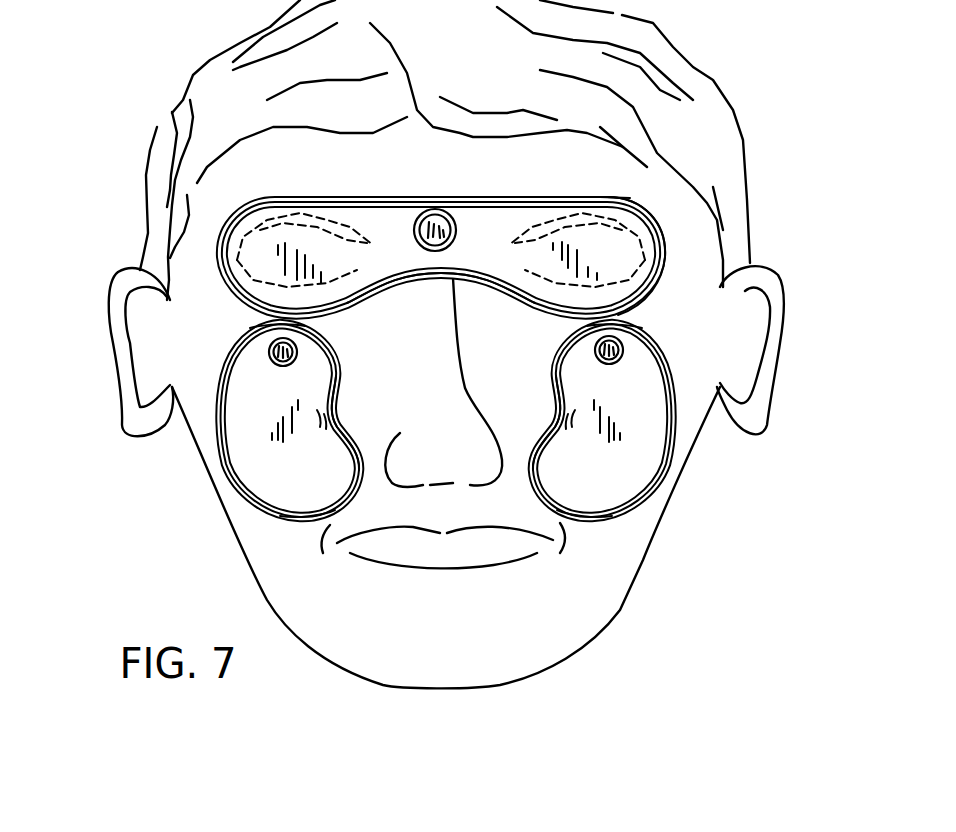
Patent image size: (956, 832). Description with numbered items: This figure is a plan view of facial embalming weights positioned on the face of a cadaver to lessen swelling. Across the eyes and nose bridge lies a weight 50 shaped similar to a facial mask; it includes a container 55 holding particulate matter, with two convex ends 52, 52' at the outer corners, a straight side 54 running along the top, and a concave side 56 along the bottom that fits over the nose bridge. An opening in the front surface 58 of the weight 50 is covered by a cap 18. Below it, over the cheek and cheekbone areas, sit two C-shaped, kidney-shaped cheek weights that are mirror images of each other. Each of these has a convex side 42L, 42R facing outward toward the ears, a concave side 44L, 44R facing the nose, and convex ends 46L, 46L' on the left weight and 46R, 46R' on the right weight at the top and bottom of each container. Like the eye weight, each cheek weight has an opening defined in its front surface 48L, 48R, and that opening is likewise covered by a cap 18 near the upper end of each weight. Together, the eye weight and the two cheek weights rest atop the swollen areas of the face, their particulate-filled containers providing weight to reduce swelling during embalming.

The cap 18 is at (449, 262).
The convex side 42L is at (237, 420).
The convex side 42R is at (665, 420).
The concave side 44L is at (381, 423).
The concave side 44R is at (519, 420).
The convex end 46L is at (231, 325).
The convex end 46R is at (658, 313).
The convex end 46L' is at (255, 547).
The convex end 46R' is at (658, 549).
The front surface 48L is at (221, 466).
The front surface 48R is at (676, 466).
The weight 50 is at (175, 122).
The convex end 52 is at (368, 258).
The convex end 52' is at (710, 256).
The straight side 54 is at (450, 172).
The container 55 is at (151, 163).
The concave side 56 is at (441, 312).
The front surface 58 is at (698, 191).